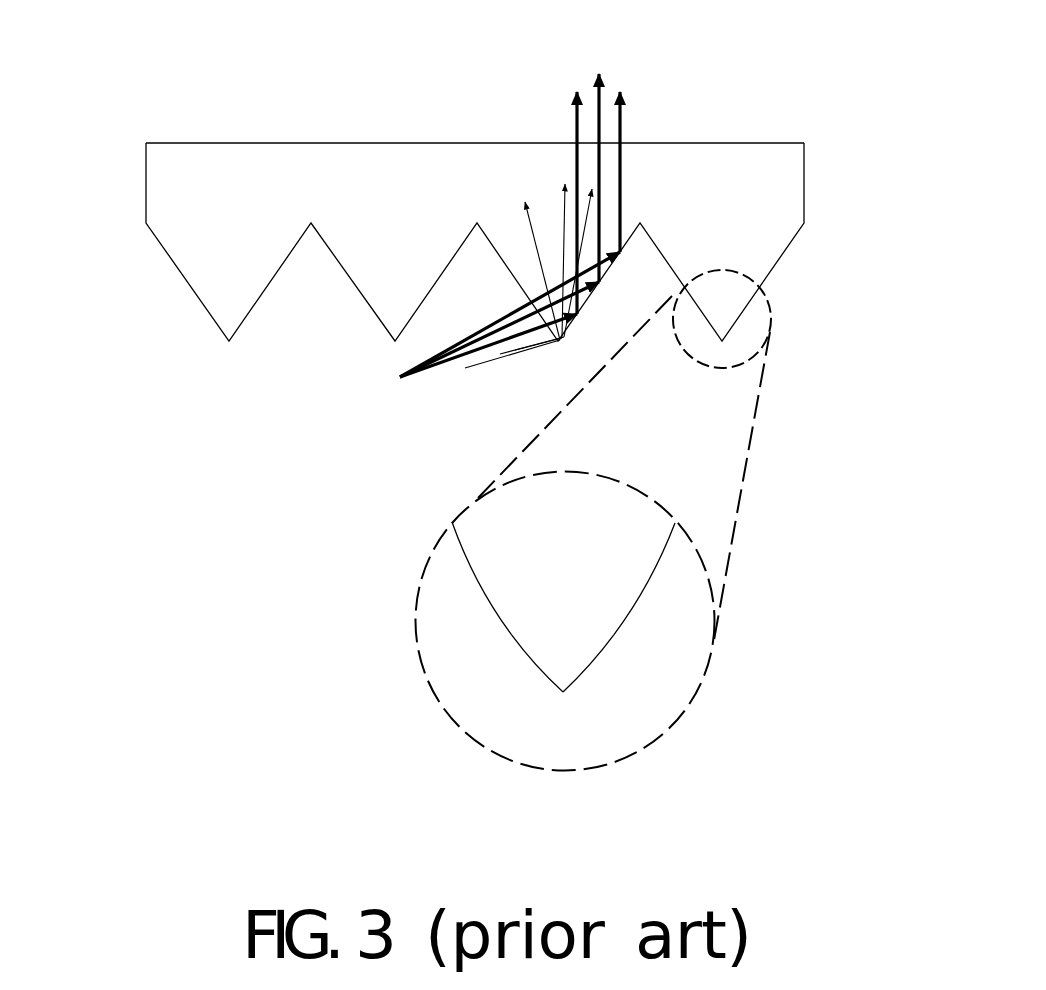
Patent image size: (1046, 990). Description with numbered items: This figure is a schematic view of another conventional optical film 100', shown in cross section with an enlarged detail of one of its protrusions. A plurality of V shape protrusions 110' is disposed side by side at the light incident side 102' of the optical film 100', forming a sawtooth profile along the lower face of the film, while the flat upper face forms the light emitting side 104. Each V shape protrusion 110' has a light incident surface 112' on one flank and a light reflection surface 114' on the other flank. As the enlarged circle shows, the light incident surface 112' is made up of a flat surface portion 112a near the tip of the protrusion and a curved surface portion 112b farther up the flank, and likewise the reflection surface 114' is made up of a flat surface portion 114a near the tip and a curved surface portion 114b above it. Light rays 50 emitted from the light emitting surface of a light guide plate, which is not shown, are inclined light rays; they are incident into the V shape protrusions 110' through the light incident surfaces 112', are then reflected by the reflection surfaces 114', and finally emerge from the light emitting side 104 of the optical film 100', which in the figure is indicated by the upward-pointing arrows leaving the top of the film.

The conventional optical film 100' is at (438, 435).
The light incident side 102' is at (438, 242).
The light emitting side 104 is at (342, 143).
The light rays 50 is at (493, 325).
The V shape protrusions 110' is at (782, 294).
The light incident surface 112' is at (426, 617).
The flat surface portion 112a is at (558, 682).
The curved surface portion 112b is at (498, 612).
The light reflection surface 114' is at (701, 617).
The flat surface portion 114a is at (572, 682).
The curved surface portion 114b is at (628, 613).